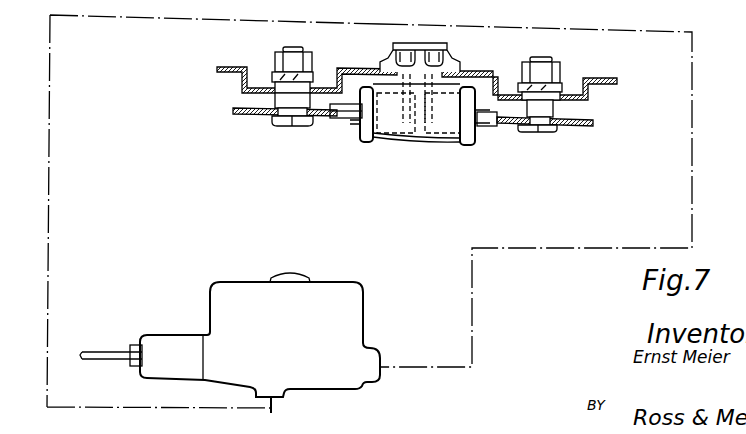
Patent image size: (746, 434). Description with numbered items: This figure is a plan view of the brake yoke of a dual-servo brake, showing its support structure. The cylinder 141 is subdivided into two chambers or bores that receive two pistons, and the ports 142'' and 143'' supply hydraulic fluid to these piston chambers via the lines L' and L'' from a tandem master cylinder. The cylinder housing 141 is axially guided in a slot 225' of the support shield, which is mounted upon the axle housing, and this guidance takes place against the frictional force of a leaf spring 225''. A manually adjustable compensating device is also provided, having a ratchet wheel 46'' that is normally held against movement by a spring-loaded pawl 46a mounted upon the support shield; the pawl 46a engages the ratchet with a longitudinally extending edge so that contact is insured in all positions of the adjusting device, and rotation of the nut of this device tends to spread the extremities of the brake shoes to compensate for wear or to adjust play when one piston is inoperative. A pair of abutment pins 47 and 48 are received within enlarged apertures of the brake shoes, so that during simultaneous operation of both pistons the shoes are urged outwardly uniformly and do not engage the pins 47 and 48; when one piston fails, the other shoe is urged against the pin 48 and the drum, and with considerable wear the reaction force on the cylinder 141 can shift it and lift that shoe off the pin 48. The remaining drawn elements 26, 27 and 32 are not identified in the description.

The spring-loaded pawl 46a is at (390, 40).
The ratchet wheel 46'' is at (423, 33).
The port 143'' is at (461, 38).
The port 142'' is at (307, 64).
The leaf spring 225'' is at (529, 71).
The lower plate 27 is at (252, 118).
The abutment pin 47 is at (292, 127).
The connecting sleeve 32 is at (353, 104).
The cylinder 141 is at (395, 128).
The slot 225' is at (428, 136).
The abutment pin 48 is at (538, 134).
The lower plate 26 is at (580, 127).
The line L' is at (213, 211).
The line L'' is at (557, 195).